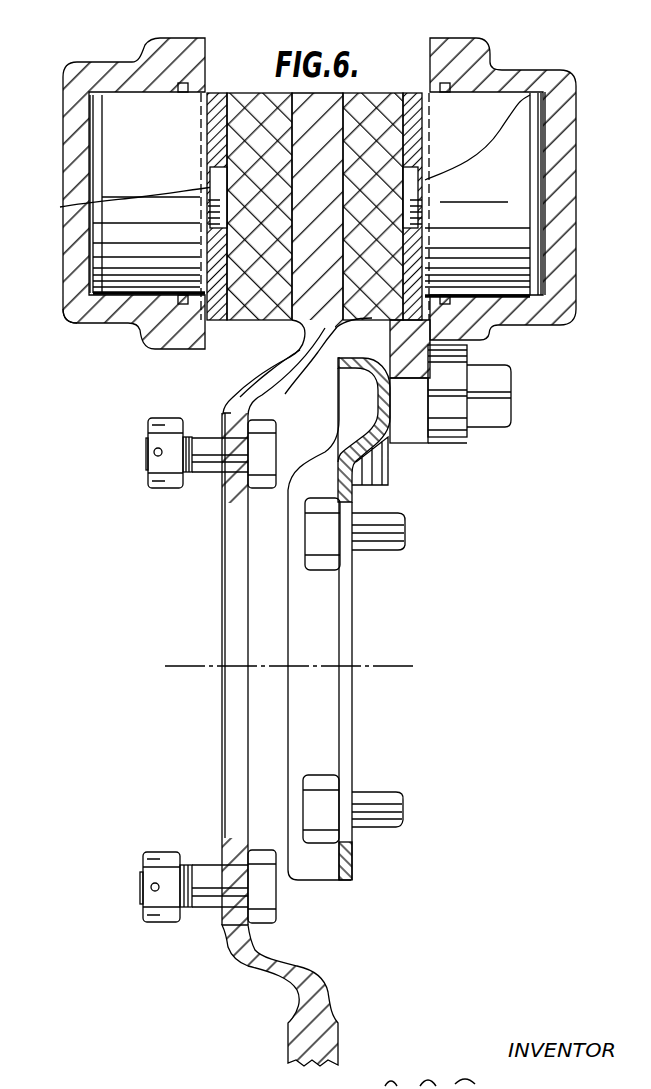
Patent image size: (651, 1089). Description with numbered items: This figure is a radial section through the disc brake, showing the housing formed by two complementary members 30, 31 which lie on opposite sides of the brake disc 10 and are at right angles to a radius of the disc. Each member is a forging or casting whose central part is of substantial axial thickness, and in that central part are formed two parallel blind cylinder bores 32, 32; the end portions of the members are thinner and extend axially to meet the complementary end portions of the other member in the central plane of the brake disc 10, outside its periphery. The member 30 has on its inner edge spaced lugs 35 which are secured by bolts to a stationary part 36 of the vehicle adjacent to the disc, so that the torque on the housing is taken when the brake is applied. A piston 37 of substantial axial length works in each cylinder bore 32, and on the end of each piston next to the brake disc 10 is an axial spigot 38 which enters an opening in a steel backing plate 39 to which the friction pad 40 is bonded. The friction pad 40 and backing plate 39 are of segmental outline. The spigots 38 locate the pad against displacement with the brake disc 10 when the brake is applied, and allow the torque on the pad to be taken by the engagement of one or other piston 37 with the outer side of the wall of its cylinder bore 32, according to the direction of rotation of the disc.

The brake disc 10 is at (362, 95).
The complementary housing member 30 is at (563, 113).
The complementary housing member 31 is at (78, 300).
The blind cylinder bore 32 is at (92, 137).
The lug 35 is at (415, 420).
The stationary part of the vehicle 36 is at (347, 590).
The piston 37 is at (125, 277).
The axial spigot 38 is at (60, 207).
The steel backing plate 39 is at (215, 93).
The friction pad 40 is at (277, 287).